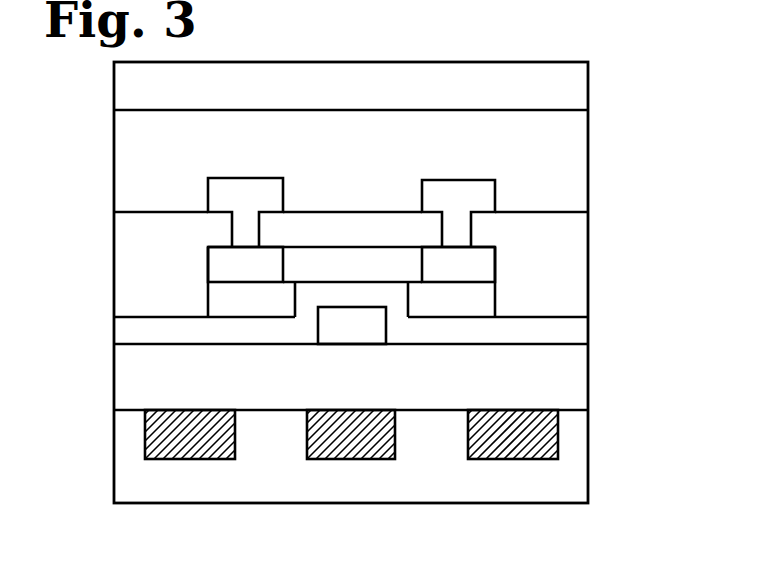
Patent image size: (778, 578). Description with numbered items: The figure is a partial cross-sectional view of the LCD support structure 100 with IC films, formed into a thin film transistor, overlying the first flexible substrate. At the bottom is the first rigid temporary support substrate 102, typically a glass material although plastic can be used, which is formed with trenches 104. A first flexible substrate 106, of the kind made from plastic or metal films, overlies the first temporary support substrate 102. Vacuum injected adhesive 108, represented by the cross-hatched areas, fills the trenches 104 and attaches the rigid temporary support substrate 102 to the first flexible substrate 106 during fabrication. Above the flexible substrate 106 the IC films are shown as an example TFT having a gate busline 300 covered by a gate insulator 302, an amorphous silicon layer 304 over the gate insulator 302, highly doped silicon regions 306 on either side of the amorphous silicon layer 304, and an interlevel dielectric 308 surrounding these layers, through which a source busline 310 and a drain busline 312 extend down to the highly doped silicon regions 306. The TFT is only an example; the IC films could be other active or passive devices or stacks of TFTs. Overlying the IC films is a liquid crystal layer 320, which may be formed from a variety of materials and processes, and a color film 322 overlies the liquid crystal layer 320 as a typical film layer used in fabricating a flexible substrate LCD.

The LCD support structure 100 is at (569, 52).
The first rigid temporary support substrate 102 is at (405, 488).
The trenches 104 is at (333, 459).
The first flexible substrate 106 is at (326, 388).
The vacuum injected adhesive 108 is at (167, 448).
The gate busline 300 is at (327, 338).
The gate insulator 302 is at (575, 332).
The amorphous silicon layer 304 is at (326, 277).
The highly doped silicon regions 306 is at (222, 277).
The interlevel dielectric 308 is at (142, 268).
The source busline 310 is at (457, 180).
The drain busline 312 is at (243, 178).
The liquid crystal layer 320 is at (323, 152).
The color film 322 is at (323, 102).